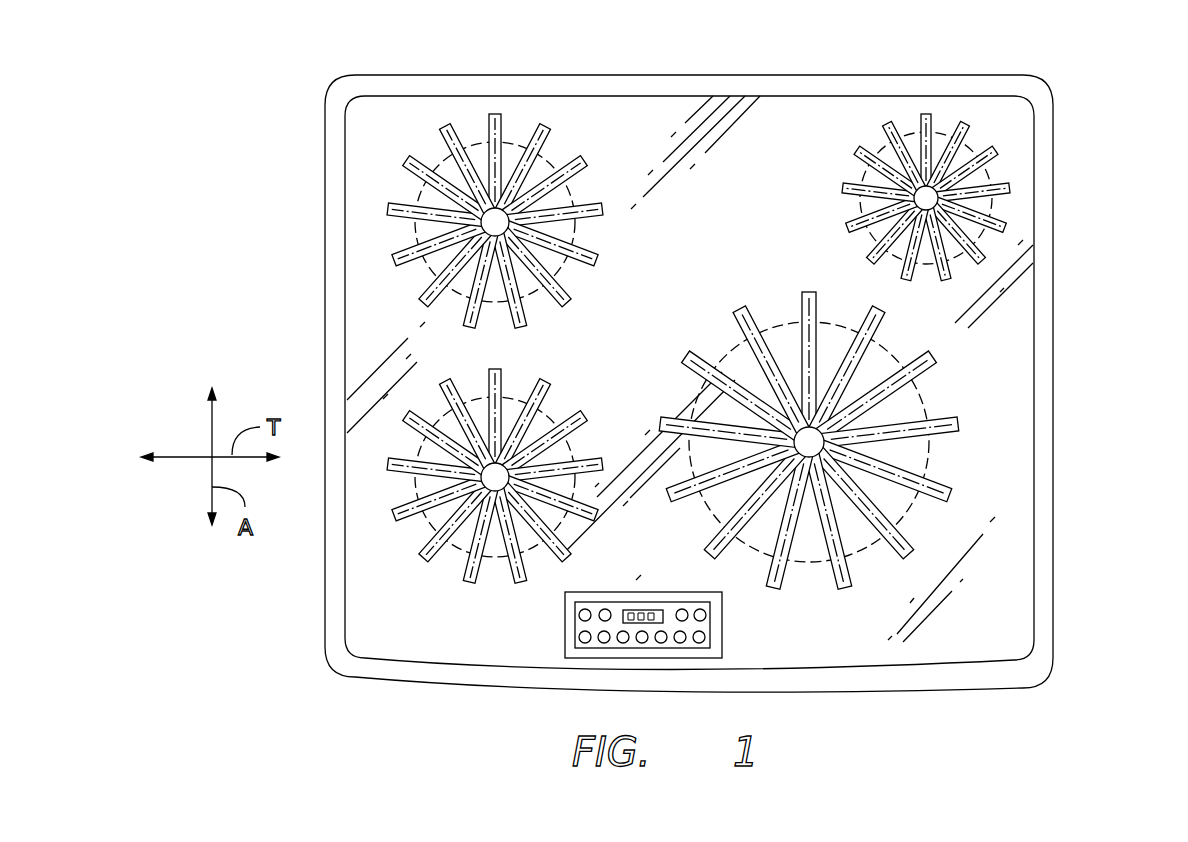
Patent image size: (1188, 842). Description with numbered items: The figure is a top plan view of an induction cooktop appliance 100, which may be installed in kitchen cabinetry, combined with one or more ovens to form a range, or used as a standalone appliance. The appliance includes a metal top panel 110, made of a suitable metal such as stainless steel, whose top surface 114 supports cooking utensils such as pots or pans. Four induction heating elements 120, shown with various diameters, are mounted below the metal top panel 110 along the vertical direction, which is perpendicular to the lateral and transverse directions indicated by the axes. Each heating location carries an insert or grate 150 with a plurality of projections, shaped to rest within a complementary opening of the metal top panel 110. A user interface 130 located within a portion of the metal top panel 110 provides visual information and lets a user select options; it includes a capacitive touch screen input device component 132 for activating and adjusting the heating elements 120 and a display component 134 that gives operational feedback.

The induction cooktop appliance 100 is at (1106, 186).
The metal top panel 110 is at (1007, 420).
The top surface 114 is at (1005, 490).
The induction heating elements 120 is at (567, 268).
The insert or grate 150 is at (588, 246).
The user interface 130 is at (565, 613).
The capacitive touch screen input device component 132 is at (698, 637).
The display component 134 is at (628, 612).